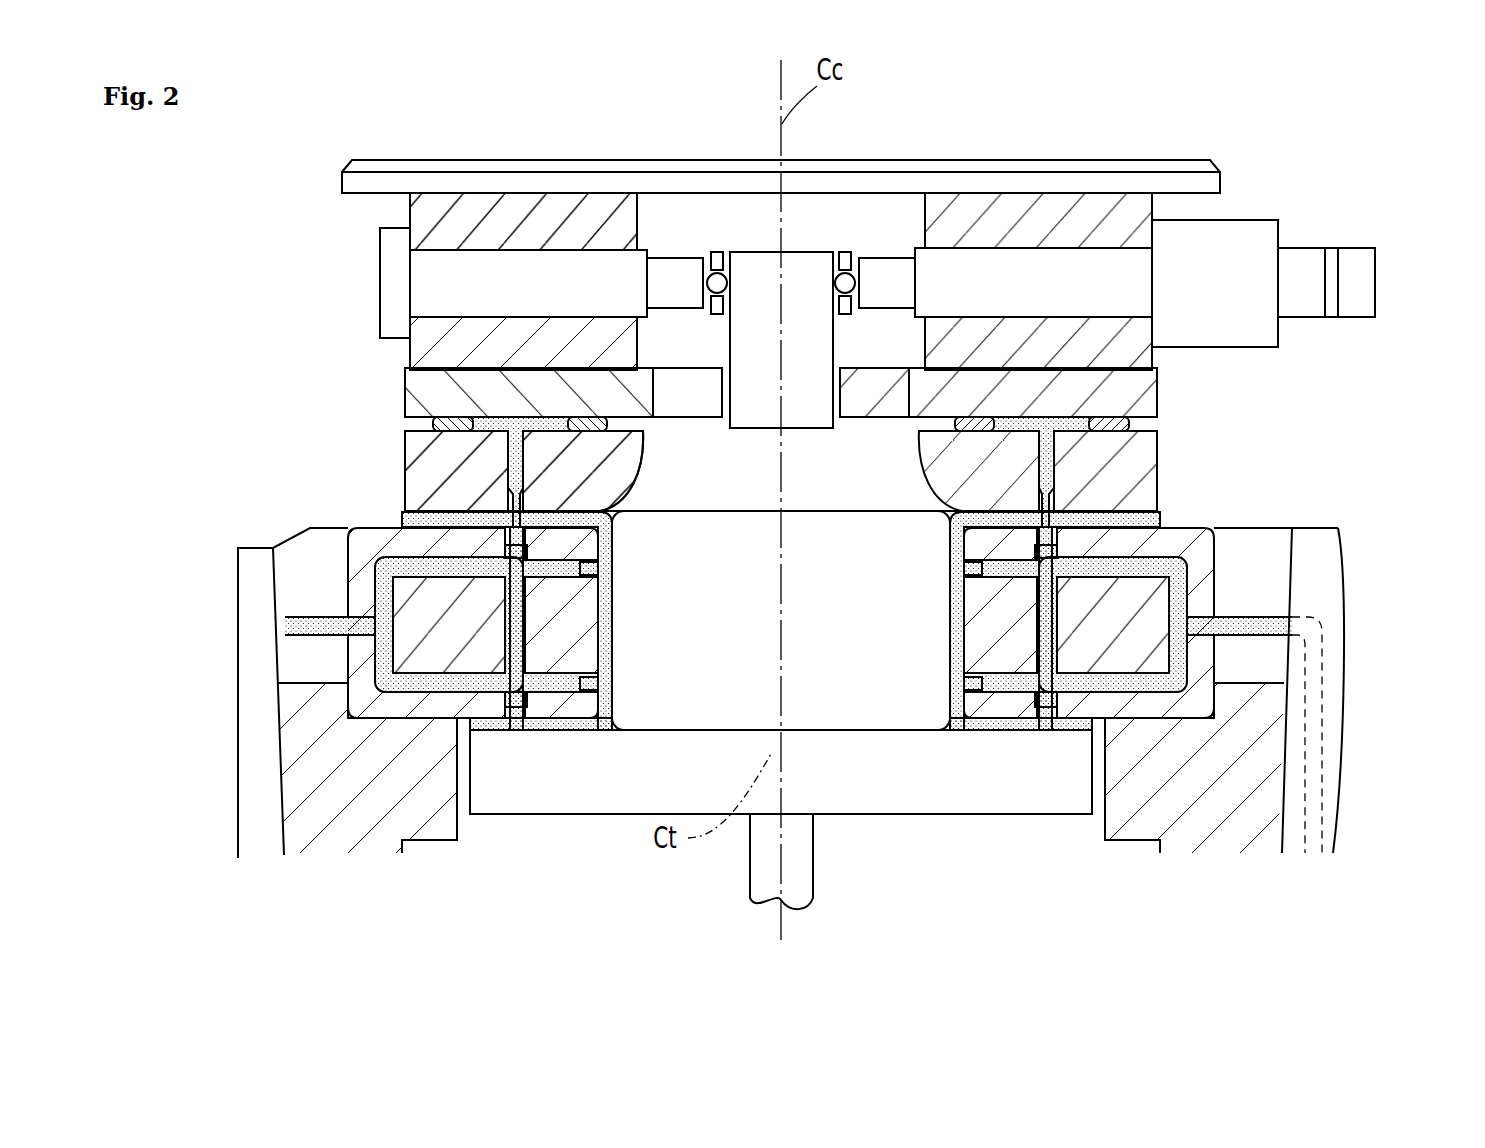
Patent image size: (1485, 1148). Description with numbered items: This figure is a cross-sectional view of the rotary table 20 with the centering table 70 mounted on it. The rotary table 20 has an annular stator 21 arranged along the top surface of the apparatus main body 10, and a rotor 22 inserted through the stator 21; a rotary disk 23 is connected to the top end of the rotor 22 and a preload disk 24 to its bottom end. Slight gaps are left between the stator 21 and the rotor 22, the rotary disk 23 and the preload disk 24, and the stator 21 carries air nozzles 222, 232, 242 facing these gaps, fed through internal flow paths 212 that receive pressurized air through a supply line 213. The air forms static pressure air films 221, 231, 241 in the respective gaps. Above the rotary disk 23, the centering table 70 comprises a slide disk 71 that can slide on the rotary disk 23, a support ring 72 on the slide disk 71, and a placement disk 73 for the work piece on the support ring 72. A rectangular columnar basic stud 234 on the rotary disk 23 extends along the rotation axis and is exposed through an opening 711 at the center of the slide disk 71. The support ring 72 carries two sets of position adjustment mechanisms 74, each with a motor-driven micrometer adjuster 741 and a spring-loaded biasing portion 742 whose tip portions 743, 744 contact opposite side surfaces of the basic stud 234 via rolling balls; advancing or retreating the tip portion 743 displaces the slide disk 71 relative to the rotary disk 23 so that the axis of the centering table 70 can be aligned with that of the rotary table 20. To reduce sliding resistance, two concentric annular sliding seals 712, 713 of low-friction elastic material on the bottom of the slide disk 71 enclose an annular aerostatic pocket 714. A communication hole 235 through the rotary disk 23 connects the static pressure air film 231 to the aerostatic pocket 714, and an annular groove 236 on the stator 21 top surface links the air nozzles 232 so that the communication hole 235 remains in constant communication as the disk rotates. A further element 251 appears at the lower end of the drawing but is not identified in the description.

The apparatus main body 10 is at (1348, 522).
The rotary table 20 is at (262, 433).
The annular stator 21 is at (360, 712).
The internal flow paths 212 is at (378, 600).
The supply line 213 is at (1325, 730).
The rotor 22 is at (832, 718).
The static pressure air film 221 is at (600, 626).
The air nozzles 222 is at (597, 568).
The rotary disk 23 is at (837, 488).
The static pressure air film 231 is at (425, 516).
The air nozzles 232 is at (515, 541).
The basic stud 234 is at (818, 262).
The communication hole 235 is at (512, 460).
The annular groove 236 is at (602, 510).
The preload disk 24 is at (922, 795).
The static pressure air film 241 is at (562, 724).
The air nozzles 242 is at (517, 720).
The output shaft 251 is at (760, 868).
The centering table 70 is at (276, 252).
The slide disk 71 is at (460, 377).
The opening 711 is at (655, 390).
The sliding seal 712 is at (577, 418).
The sliding seal 713 is at (433, 427).
The aerostatic pocket 714 is at (513, 418).
The support ring 72 is at (468, 215).
The placement disk 73 is at (530, 160).
The position adjustment mechanism 74 is at (1392, 260).
The adjuster 741 is at (1032, 272).
The biasing portion 742 is at (572, 272).
The tip portion 743 is at (873, 278).
The tip portion 744 is at (680, 275).